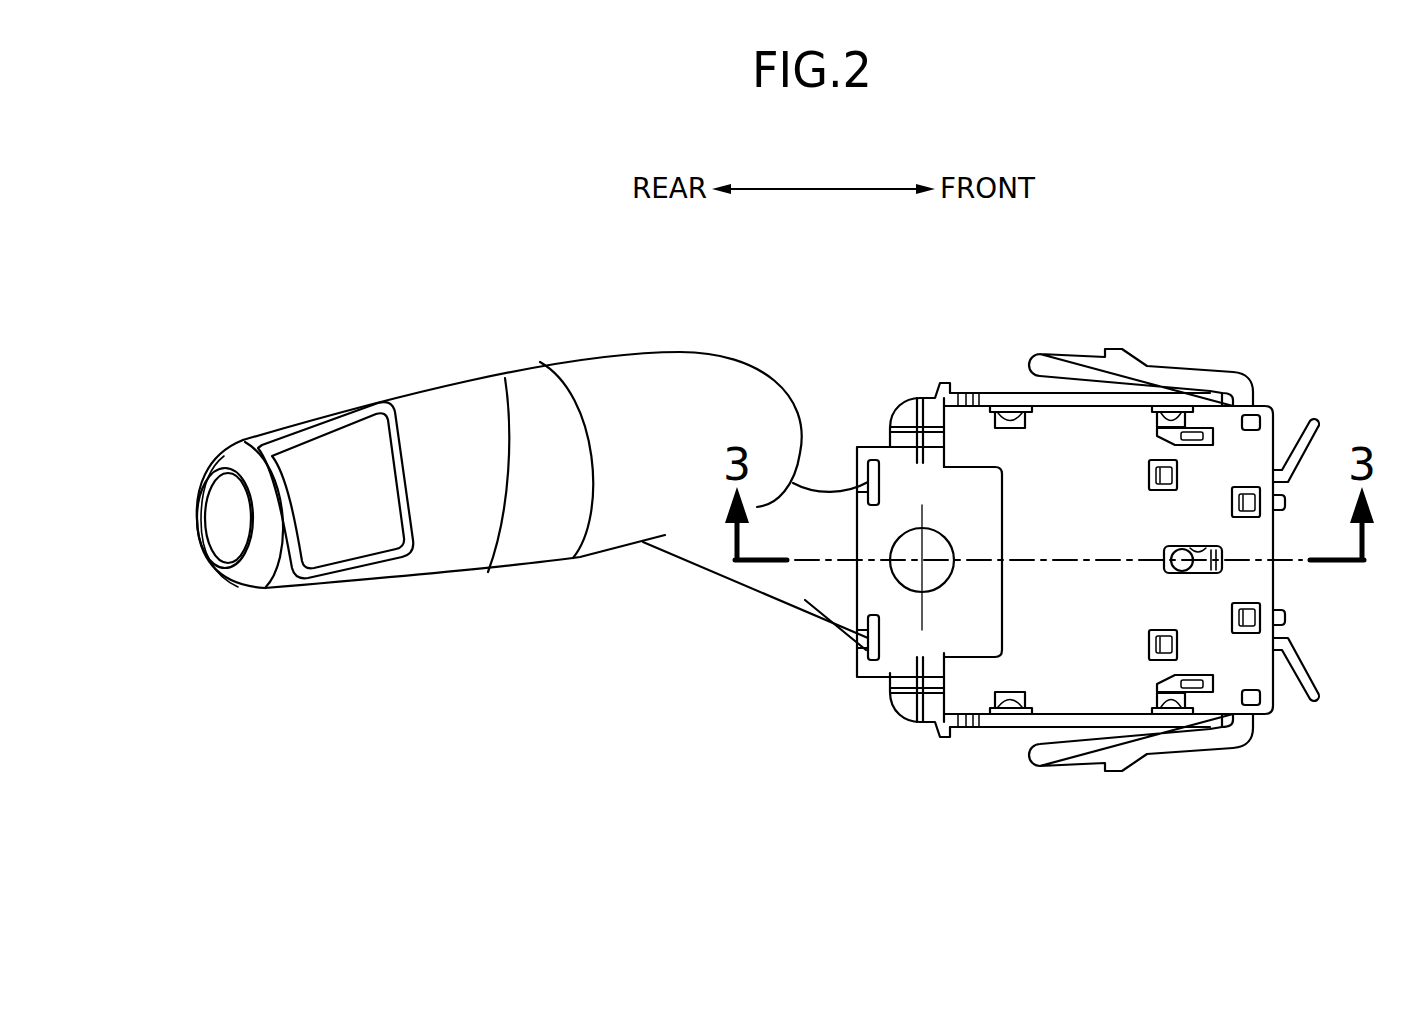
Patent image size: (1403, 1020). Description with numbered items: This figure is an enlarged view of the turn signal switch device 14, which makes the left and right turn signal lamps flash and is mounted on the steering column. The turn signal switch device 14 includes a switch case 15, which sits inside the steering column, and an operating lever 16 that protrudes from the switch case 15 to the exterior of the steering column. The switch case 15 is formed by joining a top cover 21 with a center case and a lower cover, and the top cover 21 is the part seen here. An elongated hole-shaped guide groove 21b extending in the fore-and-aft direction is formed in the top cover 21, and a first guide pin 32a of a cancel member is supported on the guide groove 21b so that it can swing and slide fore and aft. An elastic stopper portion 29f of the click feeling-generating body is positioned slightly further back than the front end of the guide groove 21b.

The turn signal switch device 14 is at (853, 358).
The switch case 15 is at (1107, 322).
The operating lever 16 is at (505, 383).
The top cover 21 is at (1010, 730).
The guide groove 21b is at (1194, 546).
The first guide pin 32a is at (1178, 569).
The elastic stopper portion 29f is at (1212, 573).